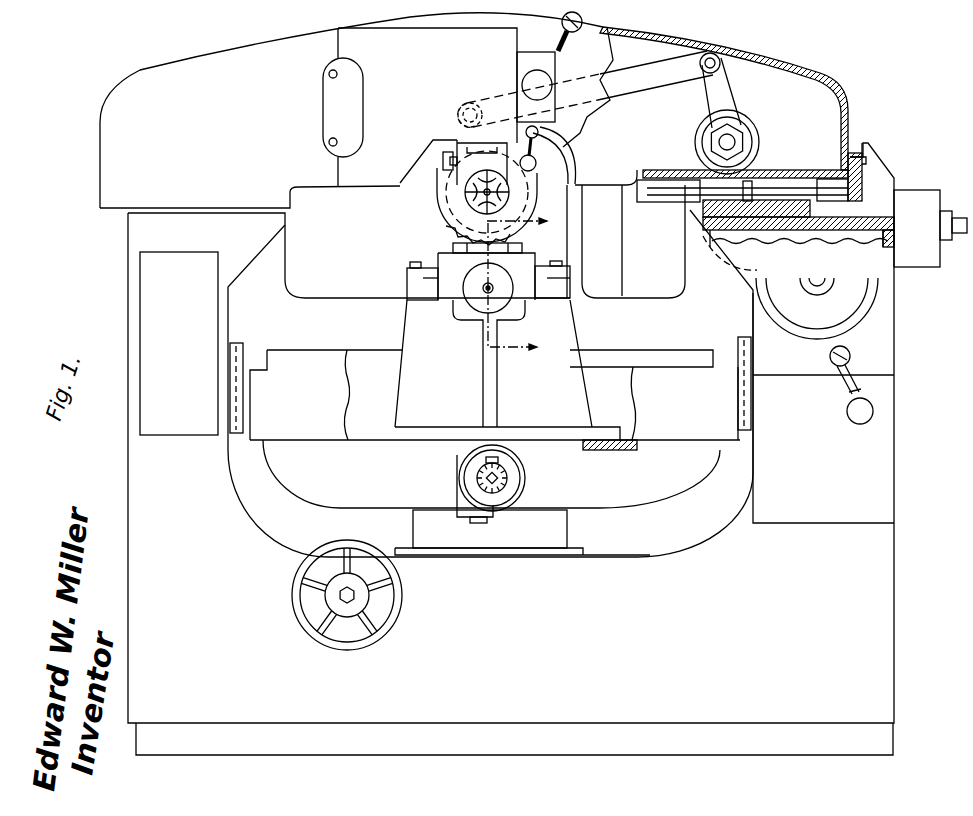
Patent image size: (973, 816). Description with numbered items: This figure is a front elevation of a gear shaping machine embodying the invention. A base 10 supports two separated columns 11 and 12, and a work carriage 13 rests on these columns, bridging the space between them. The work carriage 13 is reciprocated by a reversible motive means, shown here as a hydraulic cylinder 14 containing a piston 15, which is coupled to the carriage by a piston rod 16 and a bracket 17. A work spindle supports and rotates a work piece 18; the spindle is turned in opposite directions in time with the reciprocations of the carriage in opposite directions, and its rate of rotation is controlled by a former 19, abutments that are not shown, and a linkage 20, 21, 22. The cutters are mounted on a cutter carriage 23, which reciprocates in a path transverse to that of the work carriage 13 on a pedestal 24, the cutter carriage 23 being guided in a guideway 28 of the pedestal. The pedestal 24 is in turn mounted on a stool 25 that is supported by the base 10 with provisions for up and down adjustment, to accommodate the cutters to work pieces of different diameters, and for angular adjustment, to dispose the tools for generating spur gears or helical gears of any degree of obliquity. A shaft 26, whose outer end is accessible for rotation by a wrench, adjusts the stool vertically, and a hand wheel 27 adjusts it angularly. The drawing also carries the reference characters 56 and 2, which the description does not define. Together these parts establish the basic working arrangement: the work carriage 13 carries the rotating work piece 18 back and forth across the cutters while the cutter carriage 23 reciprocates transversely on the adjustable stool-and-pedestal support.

The base 10 is at (867, 573).
The column 11 is at (132, 282).
The column 12 is at (882, 360).
The work carriage 13 is at (230, 58).
The hydraulic cylinder 14 is at (787, 180).
The piston 15 is at (777, 193).
The piston rod 16 is at (675, 193).
The bracket 17 is at (868, 177).
The work piece 18 is at (435, 195).
The former 19 is at (773, 234).
The linkage 20 is at (722, 95).
The linkage 21 is at (640, 67).
The linkage 22 is at (465, 110).
The cutter carriage 23 is at (460, 262).
The pedestal 24 is at (567, 350).
The stool 25 is at (347, 492).
The shaft 26 is at (475, 478).
The hand wheel 27 is at (323, 637).
The guideway 28 is at (568, 282).
The work spindle 56 is at (483, 302).
The section line arrows 2 is at (521, 288).